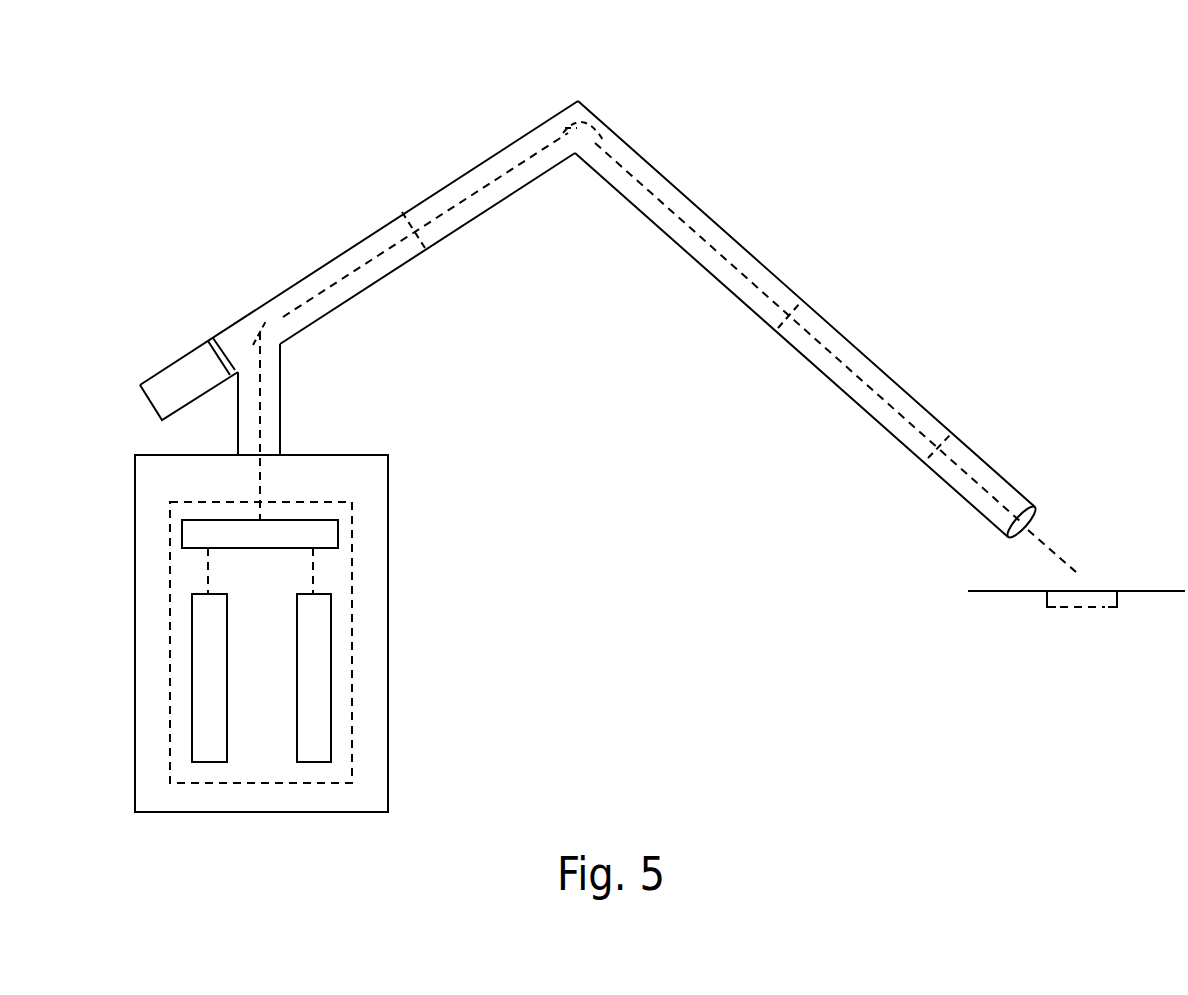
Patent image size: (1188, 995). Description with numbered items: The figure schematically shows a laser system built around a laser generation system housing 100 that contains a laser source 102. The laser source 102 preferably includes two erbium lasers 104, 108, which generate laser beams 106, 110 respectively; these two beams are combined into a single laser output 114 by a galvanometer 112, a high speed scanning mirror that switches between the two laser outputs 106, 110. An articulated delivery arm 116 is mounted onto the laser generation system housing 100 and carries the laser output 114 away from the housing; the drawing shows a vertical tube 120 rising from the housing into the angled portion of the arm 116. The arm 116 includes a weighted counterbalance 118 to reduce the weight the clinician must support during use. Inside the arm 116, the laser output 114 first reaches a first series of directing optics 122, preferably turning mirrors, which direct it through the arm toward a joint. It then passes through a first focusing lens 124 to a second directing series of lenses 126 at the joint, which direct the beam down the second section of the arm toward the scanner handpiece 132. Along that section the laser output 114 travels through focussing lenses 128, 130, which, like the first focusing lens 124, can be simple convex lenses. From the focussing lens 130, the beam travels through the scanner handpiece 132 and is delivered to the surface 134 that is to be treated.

The laser generation system housing 100 is at (388, 525).
The laser source 102 is at (352, 678).
The erbium laser 104 is at (227, 667).
The laser beam 106 is at (208, 583).
The erbium laser 108 is at (295, 688).
The laser beam 110 is at (313, 550).
The galvanometer 112 is at (210, 518).
The laser output 114 is at (262, 474).
The articulated delivery arm 116 is at (318, 267).
The weighted counterbalance 118 is at (163, 363).
The vertical arm tube 120 is at (280, 413).
The first series of directing optics 122 is at (247, 315).
The first focusing lens 124 is at (392, 213).
The second directing series of lenses 126 is at (562, 117).
The focussing lens 128 is at (805, 302).
The focussing lens 130 is at (953, 433).
The scanner handpiece 132 is at (1010, 478).
The surface 134 is at (1088, 610).